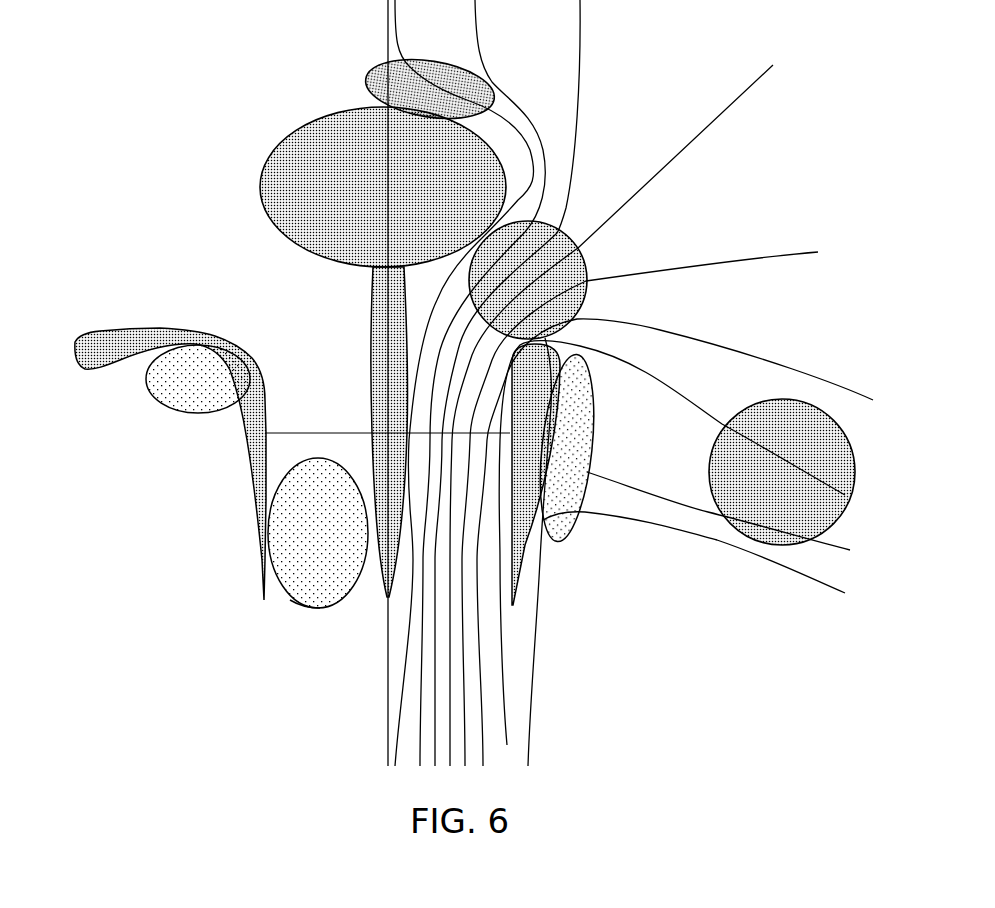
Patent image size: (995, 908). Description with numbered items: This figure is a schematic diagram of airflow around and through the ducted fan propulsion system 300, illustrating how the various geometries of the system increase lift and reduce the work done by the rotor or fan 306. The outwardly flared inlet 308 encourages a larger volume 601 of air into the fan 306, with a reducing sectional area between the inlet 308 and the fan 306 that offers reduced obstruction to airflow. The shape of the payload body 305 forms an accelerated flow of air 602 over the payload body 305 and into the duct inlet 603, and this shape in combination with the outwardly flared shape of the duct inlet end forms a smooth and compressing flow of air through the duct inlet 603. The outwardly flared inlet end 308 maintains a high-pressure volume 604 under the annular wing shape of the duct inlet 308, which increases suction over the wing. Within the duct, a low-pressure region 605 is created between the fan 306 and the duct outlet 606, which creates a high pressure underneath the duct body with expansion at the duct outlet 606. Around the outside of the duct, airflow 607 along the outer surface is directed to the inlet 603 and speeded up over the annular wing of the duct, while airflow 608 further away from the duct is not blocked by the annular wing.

The ducted fan propulsion system 300 is at (196, 161).
The payload body 305 is at (371, 198).
The rotor 306 is at (337, 432).
The outwardly flared inlet 308 is at (127, 330).
The larger volume of air 601 is at (587, 268).
The accelerated flow of air 602 is at (490, 80).
The duct inlet 603 is at (495, 365).
The high-pressure volume 604 is at (175, 413).
The low-pressure region 605 is at (310, 607).
The duct outlet 606 is at (373, 653).
The airflow around the outer surface of the duct 607 is at (593, 417).
The airflow further away from the duct 608 is at (767, 547).